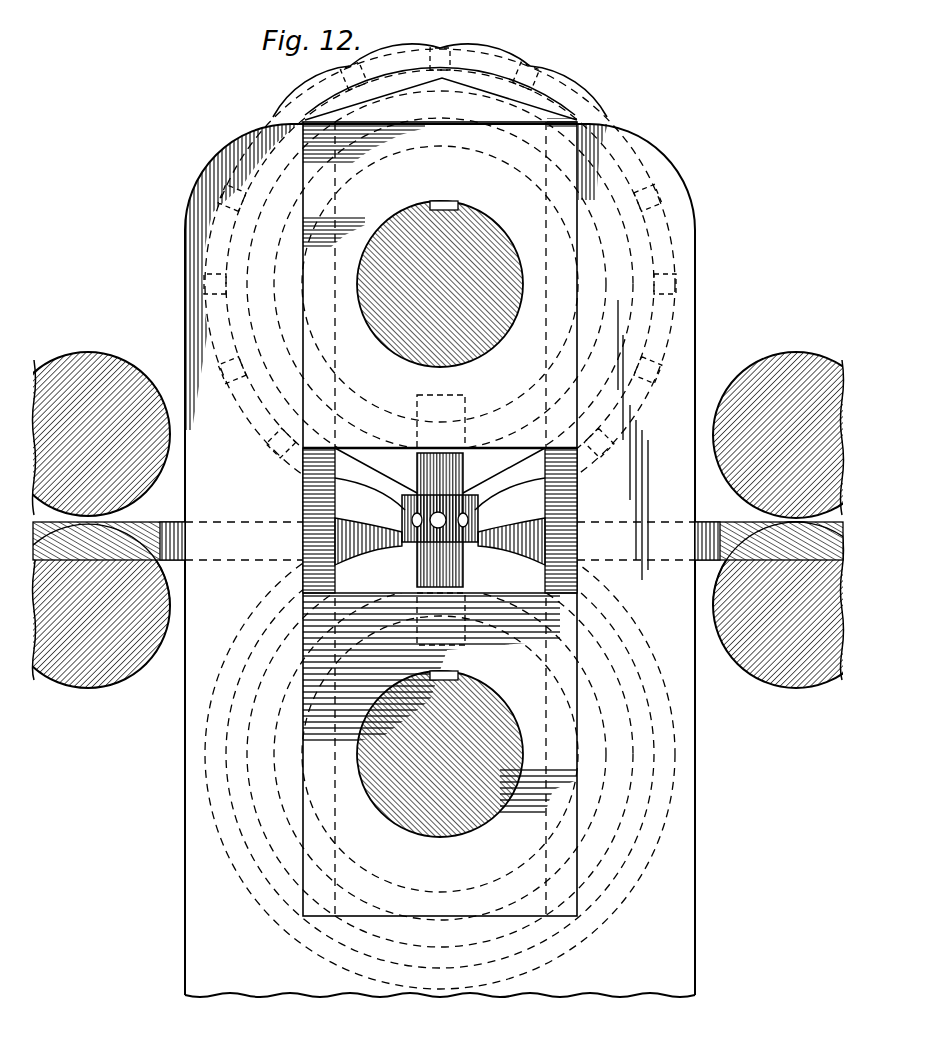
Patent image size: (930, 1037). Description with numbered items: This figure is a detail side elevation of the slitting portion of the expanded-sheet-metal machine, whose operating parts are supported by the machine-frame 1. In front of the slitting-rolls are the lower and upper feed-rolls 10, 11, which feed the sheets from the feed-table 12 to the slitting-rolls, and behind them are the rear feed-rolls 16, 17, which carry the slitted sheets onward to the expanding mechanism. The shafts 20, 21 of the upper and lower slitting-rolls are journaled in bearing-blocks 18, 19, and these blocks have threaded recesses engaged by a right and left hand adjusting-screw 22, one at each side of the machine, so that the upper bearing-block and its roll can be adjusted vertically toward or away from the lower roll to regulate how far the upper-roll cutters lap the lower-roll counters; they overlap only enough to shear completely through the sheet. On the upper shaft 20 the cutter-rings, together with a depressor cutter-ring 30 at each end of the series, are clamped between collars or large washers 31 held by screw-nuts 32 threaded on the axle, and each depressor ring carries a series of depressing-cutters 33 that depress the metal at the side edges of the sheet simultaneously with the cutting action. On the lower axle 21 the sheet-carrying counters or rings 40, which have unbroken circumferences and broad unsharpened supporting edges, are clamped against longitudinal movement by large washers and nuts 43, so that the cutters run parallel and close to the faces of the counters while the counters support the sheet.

The machine-frame 1 is at (440, 559).
The lower feed-roll 10 is at (93, 677).
The upper feed-roll 11 is at (147, 373).
The feed-table 12 is at (162, 523).
The rear feed-roll 16 is at (787, 678).
The rear feed-roll 17 is at (767, 360).
The bearing-block 18 is at (440, 284).
The bearing-block 19 is at (440, 754).
The shaft of upper slitting-roll 20 is at (498, 342).
The axle of lower slitting-roll 21 is at (490, 706).
The adjusting-screw 22 is at (464, 563).
The depressor cutter-ring 30 is at (440, 80).
The collar or large washer 31 is at (355, 85).
The screw-nut 32 is at (441, 99).
The depressing-cutter 33 is at (406, 44).
The sheet-carrying counter or ring 40 is at (372, 540).
The nut 43 is at (500, 590).